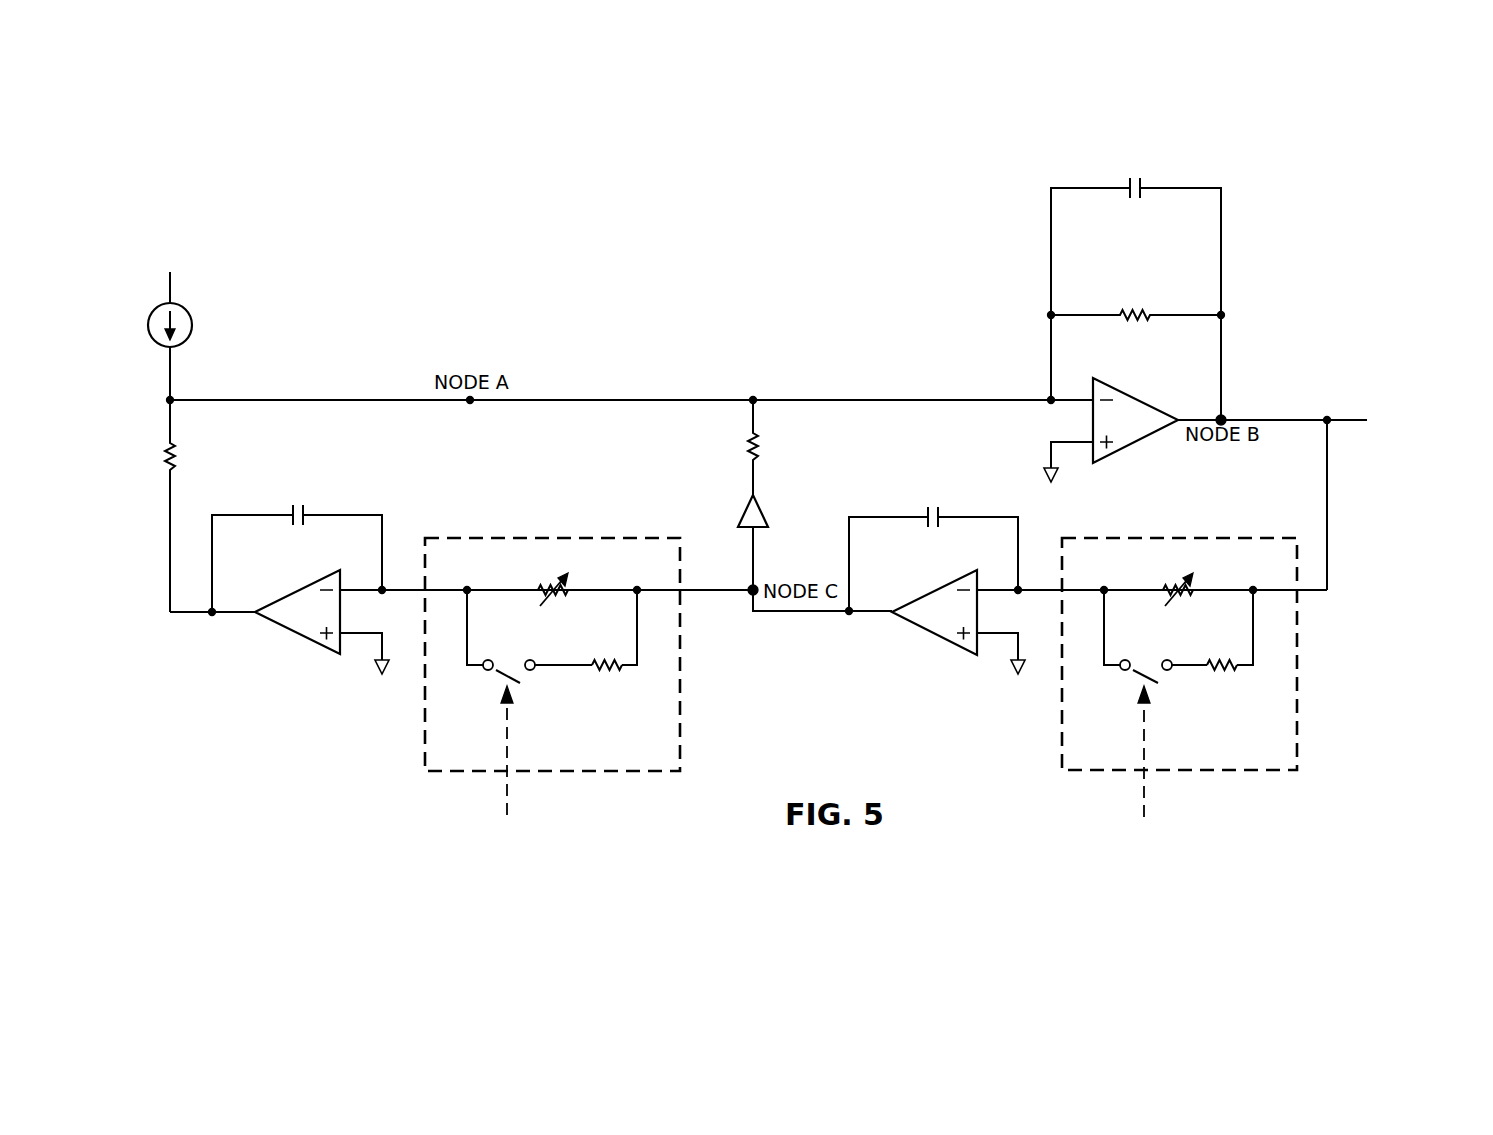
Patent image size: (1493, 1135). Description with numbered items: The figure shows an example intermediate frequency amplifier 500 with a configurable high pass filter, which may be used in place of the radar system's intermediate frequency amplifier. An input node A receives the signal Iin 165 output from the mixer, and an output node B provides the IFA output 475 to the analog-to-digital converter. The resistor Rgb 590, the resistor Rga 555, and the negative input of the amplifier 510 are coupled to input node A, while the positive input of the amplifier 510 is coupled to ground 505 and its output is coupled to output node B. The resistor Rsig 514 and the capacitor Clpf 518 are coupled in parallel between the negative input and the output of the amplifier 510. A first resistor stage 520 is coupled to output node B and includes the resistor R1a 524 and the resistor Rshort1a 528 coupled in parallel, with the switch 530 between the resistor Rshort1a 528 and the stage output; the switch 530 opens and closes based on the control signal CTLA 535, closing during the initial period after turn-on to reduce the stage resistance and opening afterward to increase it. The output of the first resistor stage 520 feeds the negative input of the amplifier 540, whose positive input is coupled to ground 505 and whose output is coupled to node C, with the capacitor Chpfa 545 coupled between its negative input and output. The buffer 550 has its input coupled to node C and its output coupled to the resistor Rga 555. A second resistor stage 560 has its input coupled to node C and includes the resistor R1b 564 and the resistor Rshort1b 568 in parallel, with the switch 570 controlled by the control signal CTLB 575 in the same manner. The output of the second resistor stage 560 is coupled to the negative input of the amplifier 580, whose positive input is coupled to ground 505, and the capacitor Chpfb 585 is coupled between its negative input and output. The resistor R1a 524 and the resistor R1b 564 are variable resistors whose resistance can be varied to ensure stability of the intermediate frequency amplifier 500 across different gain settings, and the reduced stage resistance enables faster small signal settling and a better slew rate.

The intermediate frequency amplifier 500 is at (436, 240).
The signal Iin 165 is at (148, 328).
The resistor Rgb 590 is at (178, 458).
The capacitor Chpfb 585 is at (298, 530).
The amplifier 580 is at (300, 630).
The ground 505 is at (380, 668).
The second resistor stage 560 is at (524, 528).
The resistor R1b 564 is at (558, 602).
The switch 570 is at (500, 674).
The resistor Rshort1b 568 is at (605, 672).
The control signal CTLB 575 is at (505, 782).
The resistor Rga 555 is at (762, 450).
The buffer 550 is at (741, 510).
The capacitor Chpfa 545 is at (933, 530).
The amplifier 540 is at (932, 630).
The first resistor stage 520 is at (1308, 693).
The resistor R1a 524 is at (1183, 602).
The switch 530 is at (1135, 675).
The resistor Rshort1a 528 is at (1220, 672).
The control signal CTLA 535 is at (1148, 783).
The capacitor Clpf 518 is at (1138, 200).
The resistor Rsig 514 is at (1138, 325).
The amplifier 510 is at (1133, 447).
The IFA output 475 is at (1352, 428).